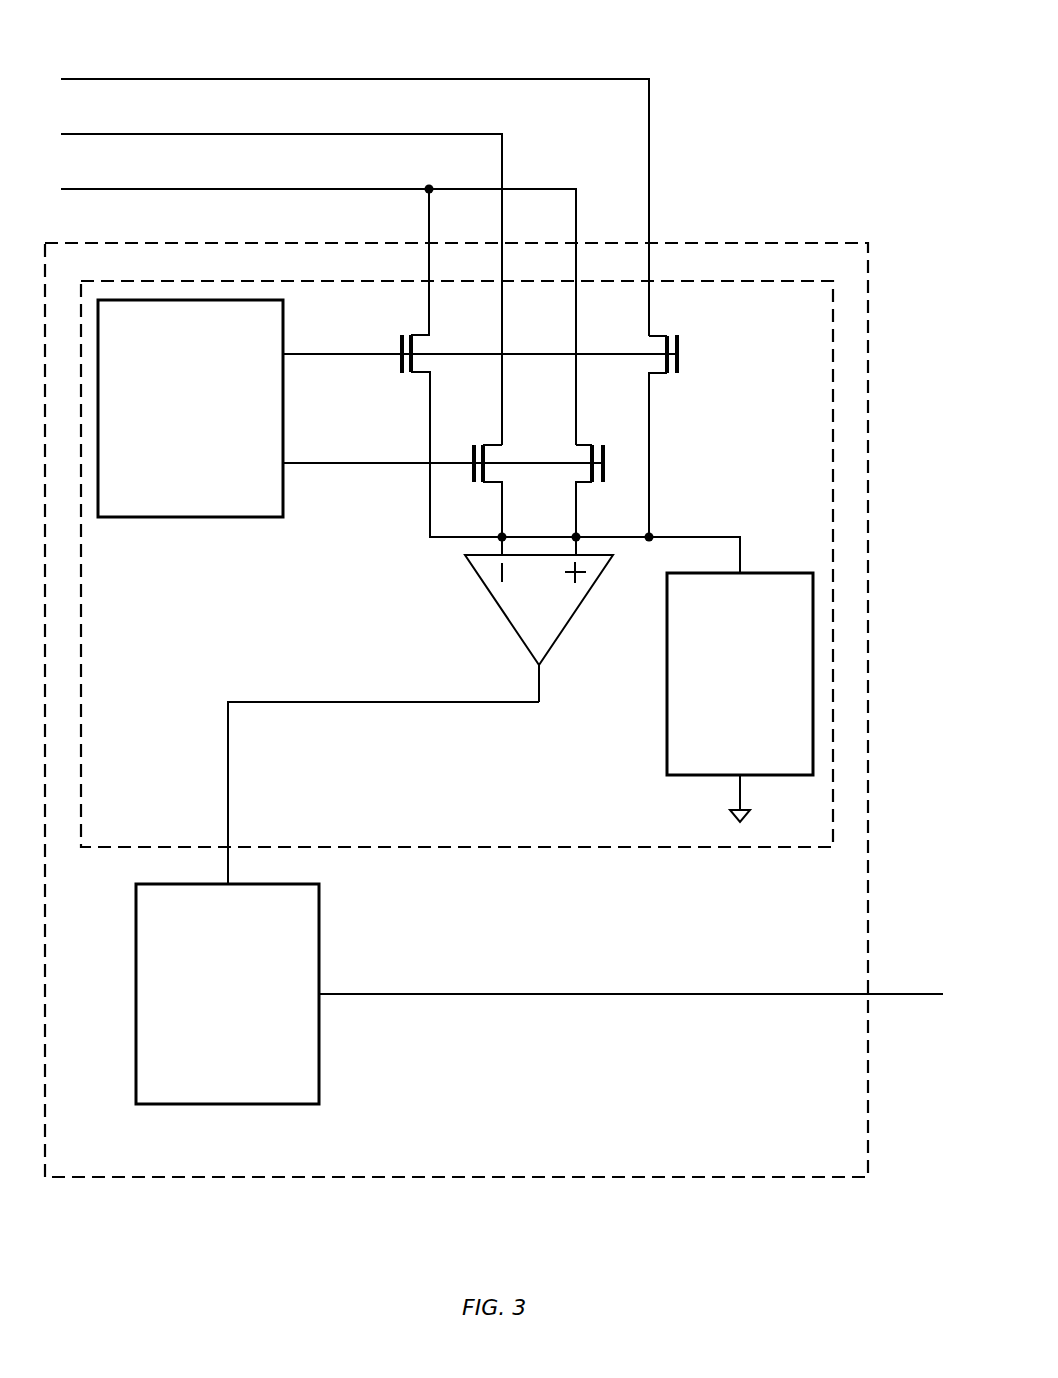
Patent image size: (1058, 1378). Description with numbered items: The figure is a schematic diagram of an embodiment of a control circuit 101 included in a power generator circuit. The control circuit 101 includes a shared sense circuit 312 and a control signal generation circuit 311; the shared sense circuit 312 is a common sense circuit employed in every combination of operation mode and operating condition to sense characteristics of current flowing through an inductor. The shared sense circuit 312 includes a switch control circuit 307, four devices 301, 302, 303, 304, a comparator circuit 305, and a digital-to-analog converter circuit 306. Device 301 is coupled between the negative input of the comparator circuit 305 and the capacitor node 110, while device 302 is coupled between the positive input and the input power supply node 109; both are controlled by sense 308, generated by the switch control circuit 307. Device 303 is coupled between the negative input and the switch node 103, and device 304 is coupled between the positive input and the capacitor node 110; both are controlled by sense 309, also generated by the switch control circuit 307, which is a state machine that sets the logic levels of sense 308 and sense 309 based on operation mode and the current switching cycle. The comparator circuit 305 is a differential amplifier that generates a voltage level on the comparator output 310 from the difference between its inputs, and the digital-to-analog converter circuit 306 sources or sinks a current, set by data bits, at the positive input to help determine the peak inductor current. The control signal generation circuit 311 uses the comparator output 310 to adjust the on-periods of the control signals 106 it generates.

The control circuit 101 is at (759, 243).
The switch node 103 is at (281, 275).
The control signals 106 is at (641, 981).
The input power supply node 109 is at (355, 168).
The capacitor node 110 is at (318, 304).
The device 301 is at (402, 334).
The device 302 is at (675, 334).
The device 303 is at (479, 443).
The device 304 is at (604, 443).
The comparator circuit 305 is at (575, 615).
The digital-to-analog converter circuit 306 is at (740, 697).
The switch control circuit 307 is at (190, 408).
The sense 308 is at (342, 355).
The sense 309 is at (346, 464).
The comparator output 310 is at (347, 701).
The control signal generation circuit 311 is at (227, 994).
The shared sense circuit 312 is at (545, 847).